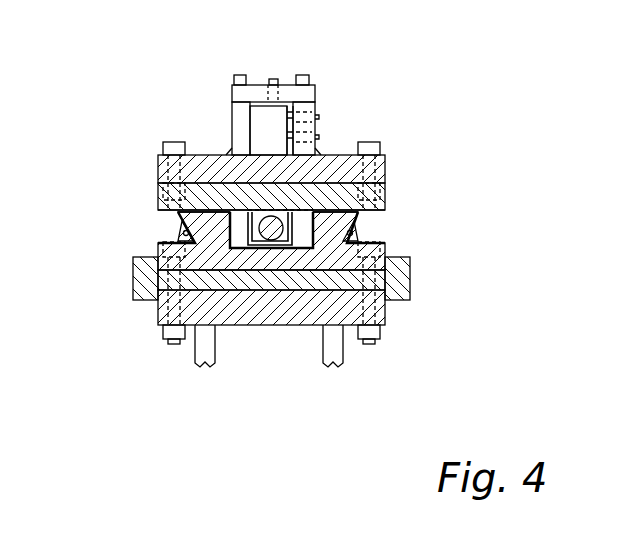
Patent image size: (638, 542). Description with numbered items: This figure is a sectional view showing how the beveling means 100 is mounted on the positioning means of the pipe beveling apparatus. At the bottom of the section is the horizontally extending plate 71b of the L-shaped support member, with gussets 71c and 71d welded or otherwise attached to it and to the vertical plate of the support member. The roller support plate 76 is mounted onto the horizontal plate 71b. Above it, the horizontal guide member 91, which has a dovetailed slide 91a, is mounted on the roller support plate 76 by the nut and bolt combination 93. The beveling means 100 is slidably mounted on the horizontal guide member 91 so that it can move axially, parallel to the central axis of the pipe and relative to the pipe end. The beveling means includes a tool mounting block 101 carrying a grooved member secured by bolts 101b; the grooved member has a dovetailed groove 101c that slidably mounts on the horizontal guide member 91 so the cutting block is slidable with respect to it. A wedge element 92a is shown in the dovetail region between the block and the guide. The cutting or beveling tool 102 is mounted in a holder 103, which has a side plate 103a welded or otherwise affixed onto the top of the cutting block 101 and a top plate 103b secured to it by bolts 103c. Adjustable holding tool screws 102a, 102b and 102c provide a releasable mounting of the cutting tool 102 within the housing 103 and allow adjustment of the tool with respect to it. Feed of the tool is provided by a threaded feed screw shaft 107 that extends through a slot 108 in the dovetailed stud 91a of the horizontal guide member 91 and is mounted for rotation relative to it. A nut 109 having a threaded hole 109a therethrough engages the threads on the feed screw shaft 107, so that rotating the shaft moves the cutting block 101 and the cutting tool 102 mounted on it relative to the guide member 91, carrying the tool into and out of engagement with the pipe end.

The beveling means 100 is at (127, 150).
The tool mounting block 101 is at (385, 176).
The bolts 101b is at (172, 142).
The dovetailed groove 101c is at (168, 218).
The cutting or beveling tool 102 is at (262, 118).
The adjustable holding tool screw 102a is at (275, 78).
The adjustable holding tool screw 102b is at (316, 118).
The adjustable holding tool screw 102c is at (316, 137).
The holder 103 is at (317, 95).
The side plate 103a is at (240, 128).
The top plate 103b is at (289, 78).
The bolts 103c is at (238, 76).
The horizontal guide member 91 is at (385, 250).
The dovetailed slide 91a is at (385, 197).
The wedge 92a is at (170, 233).
The threaded feed screw shaft 107 is at (278, 240).
The slot 108 is at (300, 240).
The nut 109 is at (284, 226).
The threaded hole 109a is at (273, 246).
The roller support plate 76 is at (412, 288).
The horizontally extending plate 71b is at (243, 326).
The gusset 71c is at (197, 362).
The gusset 71d is at (333, 368).
The nut and bolt combination 93 is at (165, 338).